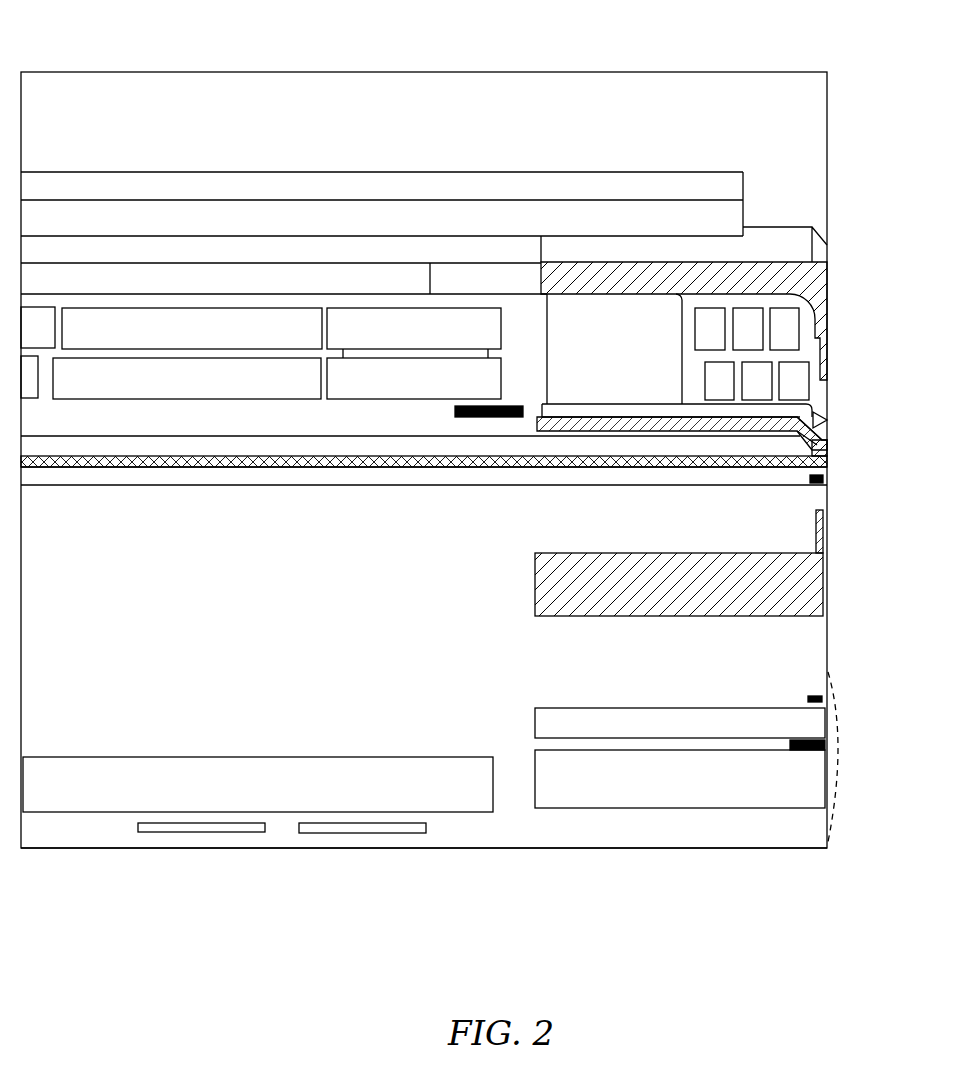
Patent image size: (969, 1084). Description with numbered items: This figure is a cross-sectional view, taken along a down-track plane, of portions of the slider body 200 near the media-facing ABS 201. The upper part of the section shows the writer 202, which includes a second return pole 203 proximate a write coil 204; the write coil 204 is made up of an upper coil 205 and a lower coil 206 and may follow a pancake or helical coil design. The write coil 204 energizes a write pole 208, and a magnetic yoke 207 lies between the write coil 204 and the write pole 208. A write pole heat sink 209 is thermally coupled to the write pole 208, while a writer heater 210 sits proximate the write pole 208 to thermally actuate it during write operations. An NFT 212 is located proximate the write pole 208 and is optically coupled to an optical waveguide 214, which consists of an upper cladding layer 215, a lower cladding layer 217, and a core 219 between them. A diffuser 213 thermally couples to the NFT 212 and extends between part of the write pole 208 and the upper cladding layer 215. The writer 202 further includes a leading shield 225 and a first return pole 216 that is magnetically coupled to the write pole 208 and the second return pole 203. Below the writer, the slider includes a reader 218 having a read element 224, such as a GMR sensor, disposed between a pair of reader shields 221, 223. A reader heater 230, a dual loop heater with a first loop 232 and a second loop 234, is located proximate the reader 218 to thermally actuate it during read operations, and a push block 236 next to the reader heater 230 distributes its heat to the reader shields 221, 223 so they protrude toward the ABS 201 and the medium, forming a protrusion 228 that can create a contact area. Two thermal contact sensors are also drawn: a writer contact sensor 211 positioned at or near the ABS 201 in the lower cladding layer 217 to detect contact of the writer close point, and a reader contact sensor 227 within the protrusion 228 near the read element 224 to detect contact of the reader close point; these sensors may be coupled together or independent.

The slider body 200 is at (718, 72).
The media-facing ABS 201 is at (830, 118).
The writer 202 is at (450, 300).
The second return pole 203 is at (827, 282).
The write coil 204 is at (652, 338).
The upper coil 205 is at (695, 330).
The lower coil 206 is at (705, 378).
The magnetic yoke 207 is at (612, 410).
The write pole 208 is at (822, 442).
The write pole heat sink 209 is at (828, 417).
The writer heater 210 is at (455, 410).
The contact sensor 211 is at (818, 470).
The NFT 212 is at (812, 447).
The diffuser 213 is at (603, 432).
The optical waveguide 214 is at (182, 486).
The upper cladding layer 215 is at (268, 448).
The first return pole 216 is at (822, 598).
The lower cladding layer 217 is at (265, 477).
The reader 218 is at (688, 757).
The core 219 is at (328, 467).
The reader shield 221 is at (822, 725).
The reader shield 223 is at (820, 780).
The read element 224 is at (825, 745).
The leading shield 225 is at (826, 531).
The contact sensor 227 is at (828, 700).
The protrusion 228 is at (845, 810).
The reader heater 230 is at (278, 835).
The first loop 232 is at (425, 826).
The second loop 234 is at (138, 826).
The push block 236 is at (170, 772).